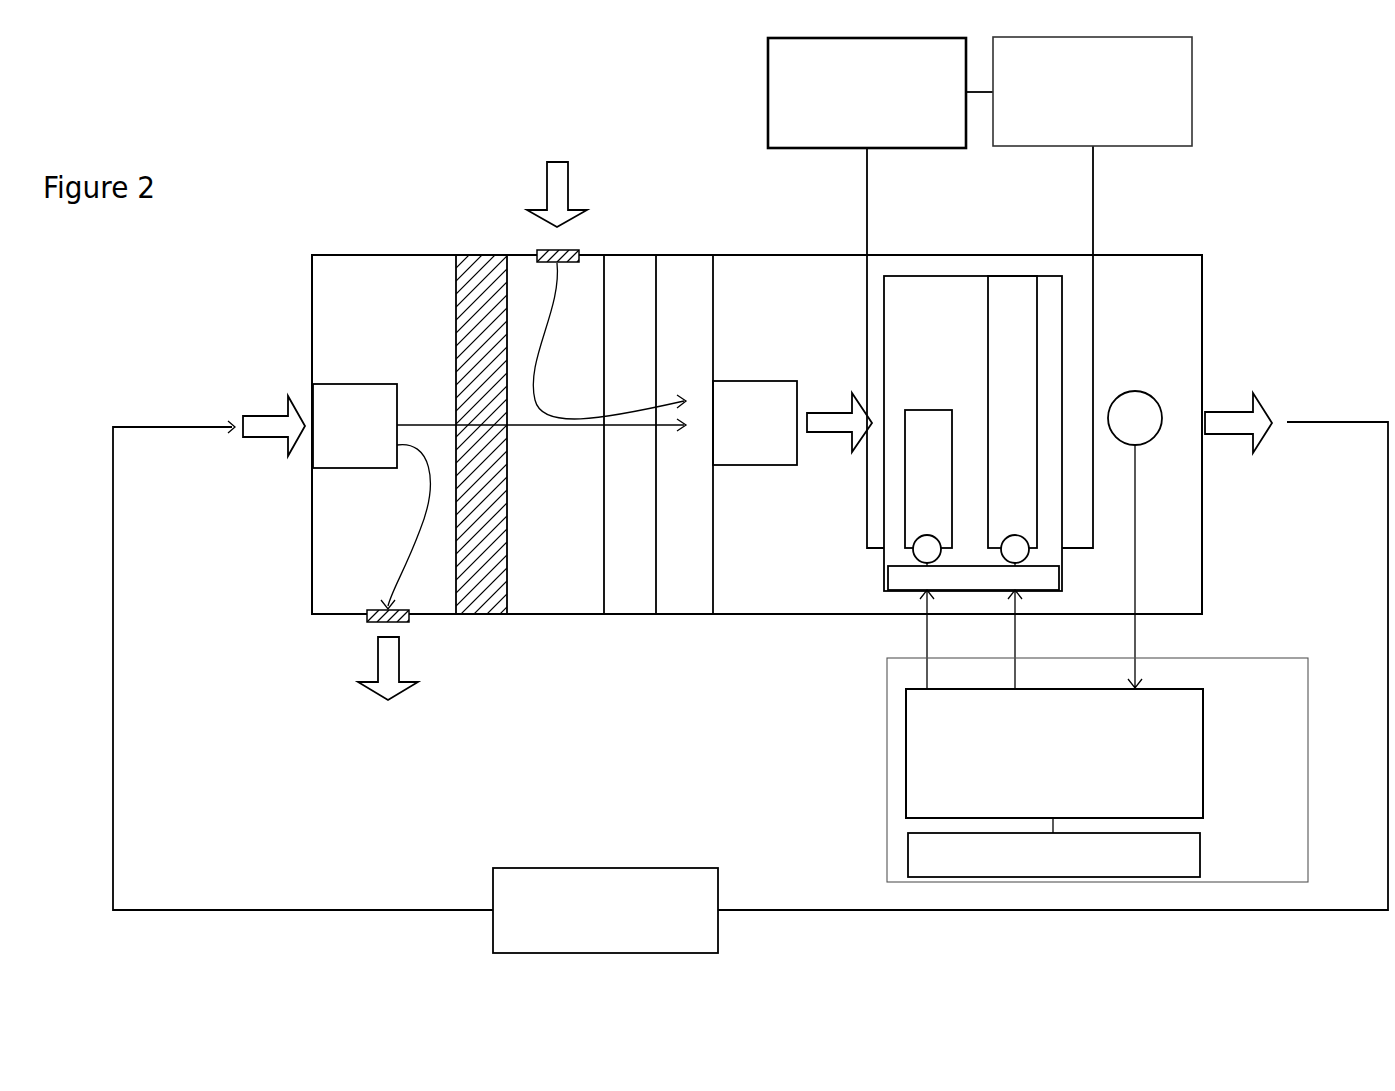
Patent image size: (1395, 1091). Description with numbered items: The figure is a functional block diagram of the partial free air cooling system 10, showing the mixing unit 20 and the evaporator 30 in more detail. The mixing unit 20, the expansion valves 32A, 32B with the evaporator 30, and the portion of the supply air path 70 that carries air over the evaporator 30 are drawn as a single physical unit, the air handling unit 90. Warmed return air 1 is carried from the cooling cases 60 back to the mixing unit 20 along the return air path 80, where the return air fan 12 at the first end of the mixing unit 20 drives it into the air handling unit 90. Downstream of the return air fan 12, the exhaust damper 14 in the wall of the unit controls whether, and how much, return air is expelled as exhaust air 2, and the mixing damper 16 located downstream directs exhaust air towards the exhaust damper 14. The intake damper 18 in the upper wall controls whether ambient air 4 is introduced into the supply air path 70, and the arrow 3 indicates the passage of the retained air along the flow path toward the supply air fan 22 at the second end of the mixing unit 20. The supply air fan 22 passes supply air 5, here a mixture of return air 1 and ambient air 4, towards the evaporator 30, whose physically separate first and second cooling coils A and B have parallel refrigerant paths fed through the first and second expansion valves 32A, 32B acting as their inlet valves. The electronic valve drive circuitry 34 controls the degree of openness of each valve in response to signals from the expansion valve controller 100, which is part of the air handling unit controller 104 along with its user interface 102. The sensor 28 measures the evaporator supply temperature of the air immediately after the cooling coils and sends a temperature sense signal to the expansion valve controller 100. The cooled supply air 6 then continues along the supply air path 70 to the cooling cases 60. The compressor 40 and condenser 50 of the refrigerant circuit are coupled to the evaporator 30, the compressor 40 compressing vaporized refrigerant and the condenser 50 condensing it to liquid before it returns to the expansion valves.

The partial free air cooling system 10 is at (1285, 88).
The return air fan 12 is at (355, 426).
The exhaust damper 14 is at (382, 533).
The mixing damper 16 is at (481, 437).
The intake damper 18 is at (553, 259).
The mixing unit 20 is at (360, 247).
The supply air fan 22 is at (755, 423).
The sensor 28 is at (1135, 539).
The evaporator 30 is at (973, 433).
The first expansion valve 32A is at (921, 550).
The second expansion valve 32B is at (1014, 550).
The electronic valve drive circuitry 34 is at (973, 627).
The compressor 40 is at (930, 293).
The condenser 50 is at (1092, 91).
The cooling cases 60 is at (605, 910).
The supply air path 70 is at (791, 352).
The return air path 80 is at (97, 631).
The air handling unit 90 is at (663, 226).
The expansion valve controller 100 is at (1054, 761).
The user interface 102 is at (1054, 855).
The air handling unit controller 104 is at (1097, 770).
The return air 1 is at (262, 423).
The exhaust air 2 is at (388, 668).
The air flow arrow 3 is at (541, 416).
The ambient air 4 is at (606, 290).
The supply air 5 is at (839, 422).
The cooled supply air 6 is at (1238, 423).